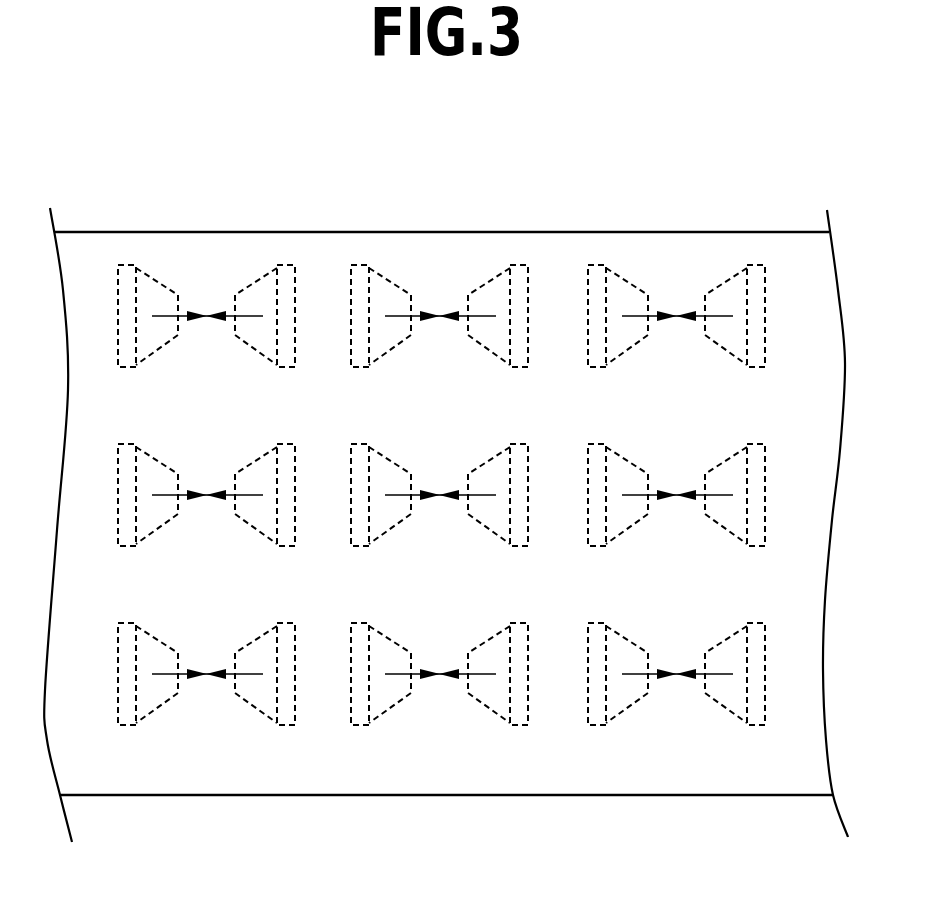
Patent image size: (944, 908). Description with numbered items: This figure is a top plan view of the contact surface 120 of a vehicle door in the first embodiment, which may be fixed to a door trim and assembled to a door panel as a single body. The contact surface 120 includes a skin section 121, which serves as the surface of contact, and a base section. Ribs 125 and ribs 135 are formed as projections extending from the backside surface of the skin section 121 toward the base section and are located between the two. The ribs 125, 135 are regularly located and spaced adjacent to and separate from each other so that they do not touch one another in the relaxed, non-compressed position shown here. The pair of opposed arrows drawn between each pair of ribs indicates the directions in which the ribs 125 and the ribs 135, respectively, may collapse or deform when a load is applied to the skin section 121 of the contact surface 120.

The contact surface 120 is at (181, 120).
The skin section 121 is at (772, 232).
The ribs 125 is at (151, 270).
The ribs 135 is at (263, 270).